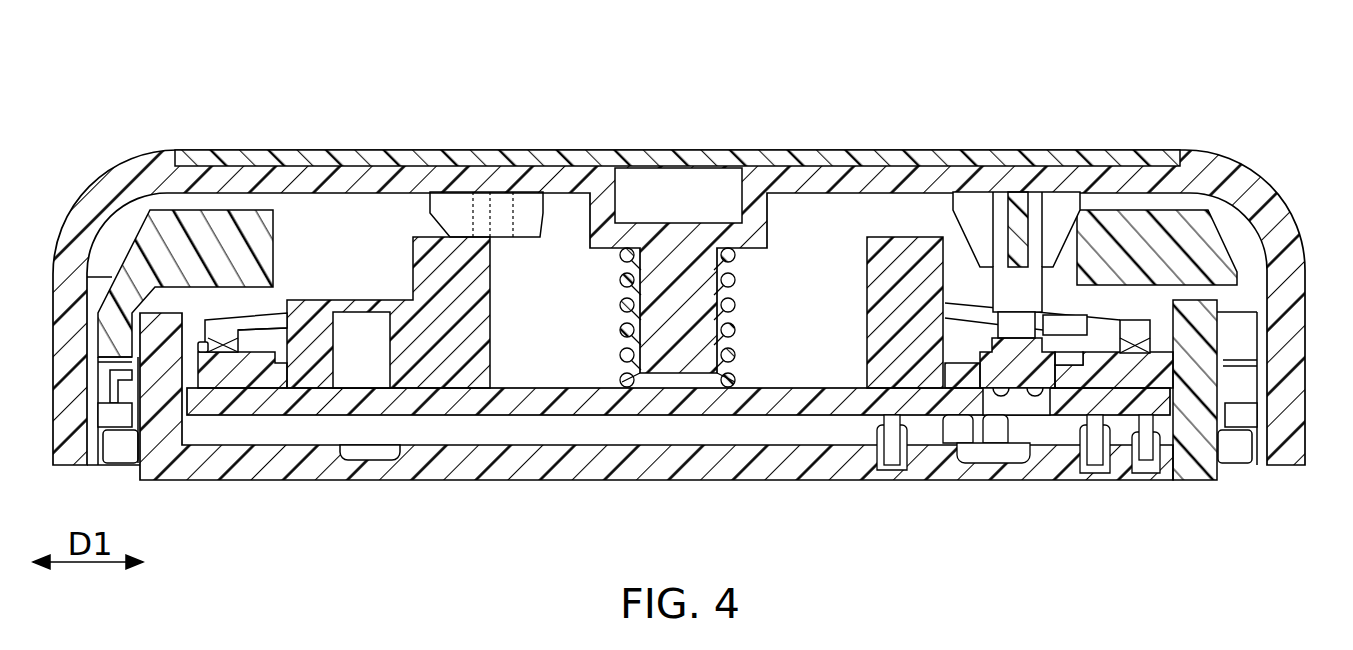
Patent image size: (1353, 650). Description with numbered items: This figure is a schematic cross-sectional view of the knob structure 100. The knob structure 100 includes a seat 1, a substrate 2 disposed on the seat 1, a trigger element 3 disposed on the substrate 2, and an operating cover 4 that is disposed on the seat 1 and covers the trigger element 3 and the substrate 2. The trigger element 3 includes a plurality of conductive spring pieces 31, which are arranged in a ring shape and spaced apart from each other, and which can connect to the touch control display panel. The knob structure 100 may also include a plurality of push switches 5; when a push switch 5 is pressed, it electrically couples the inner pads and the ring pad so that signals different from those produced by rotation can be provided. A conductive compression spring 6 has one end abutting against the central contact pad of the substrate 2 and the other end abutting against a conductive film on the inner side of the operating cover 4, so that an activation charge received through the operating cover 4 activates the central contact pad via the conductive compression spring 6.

The knob structure 100 is at (702, 319).
The seat 1 is at (521, 478).
The substrate 2 is at (788, 384).
The trigger element 3 is at (1023, 503).
The conductive spring pieces 31 is at (890, 458).
The operating cover 4 is at (1285, 222).
The push switches 5 is at (1052, 356).
The conductive compression spring 6 is at (624, 320).